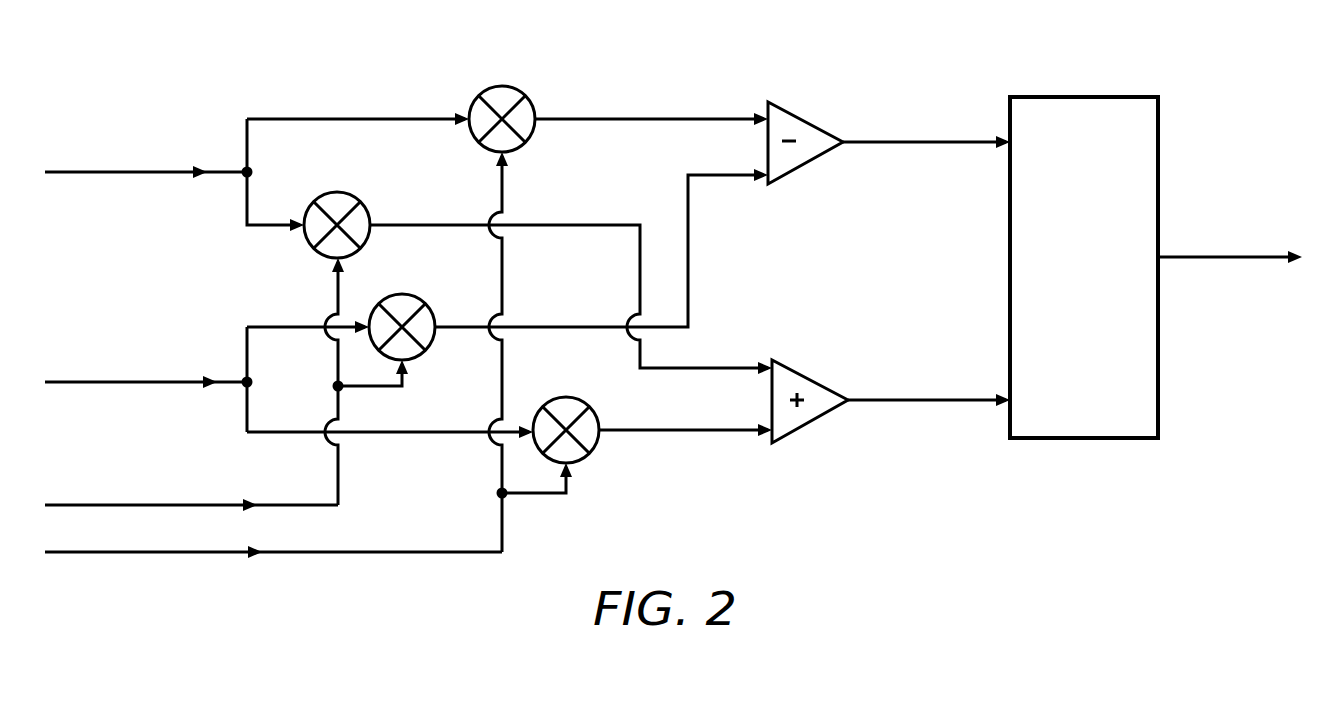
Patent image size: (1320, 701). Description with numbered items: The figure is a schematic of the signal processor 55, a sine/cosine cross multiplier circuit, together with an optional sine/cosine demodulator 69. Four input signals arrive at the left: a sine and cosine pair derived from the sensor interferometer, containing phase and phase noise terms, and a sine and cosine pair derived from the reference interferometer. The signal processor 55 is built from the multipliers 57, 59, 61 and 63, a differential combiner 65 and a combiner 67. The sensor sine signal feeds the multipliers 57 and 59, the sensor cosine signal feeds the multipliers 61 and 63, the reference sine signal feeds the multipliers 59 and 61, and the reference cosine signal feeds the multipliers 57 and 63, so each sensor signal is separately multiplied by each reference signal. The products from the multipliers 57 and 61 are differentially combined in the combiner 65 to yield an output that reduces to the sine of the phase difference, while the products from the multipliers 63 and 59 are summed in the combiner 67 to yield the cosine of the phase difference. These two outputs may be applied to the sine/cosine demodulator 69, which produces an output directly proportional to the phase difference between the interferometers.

The signal processor 55 is at (690, 80).
The multiplier 57 is at (506, 86).
The multiplier 59 is at (380, 170).
The multiplier 61 is at (425, 304).
The multiplier 63 is at (563, 397).
The differential combiner 65 is at (797, 110).
The combiner 67 is at (810, 338).
The sine/cosine demodulator 69 is at (1083, 97).